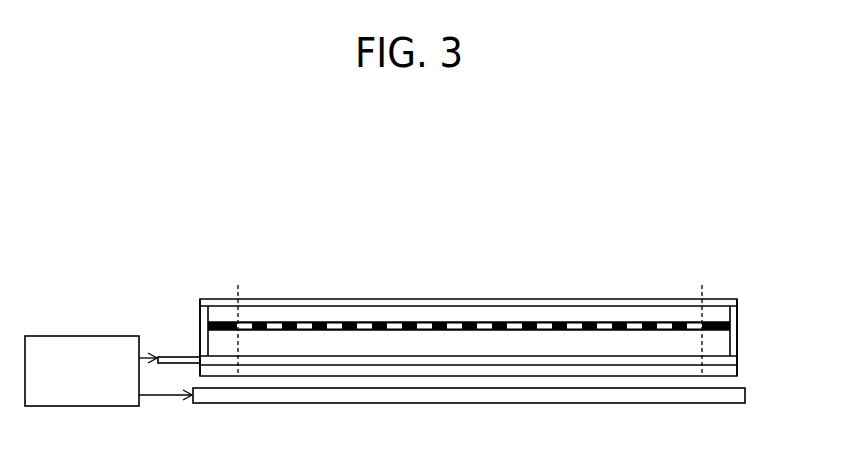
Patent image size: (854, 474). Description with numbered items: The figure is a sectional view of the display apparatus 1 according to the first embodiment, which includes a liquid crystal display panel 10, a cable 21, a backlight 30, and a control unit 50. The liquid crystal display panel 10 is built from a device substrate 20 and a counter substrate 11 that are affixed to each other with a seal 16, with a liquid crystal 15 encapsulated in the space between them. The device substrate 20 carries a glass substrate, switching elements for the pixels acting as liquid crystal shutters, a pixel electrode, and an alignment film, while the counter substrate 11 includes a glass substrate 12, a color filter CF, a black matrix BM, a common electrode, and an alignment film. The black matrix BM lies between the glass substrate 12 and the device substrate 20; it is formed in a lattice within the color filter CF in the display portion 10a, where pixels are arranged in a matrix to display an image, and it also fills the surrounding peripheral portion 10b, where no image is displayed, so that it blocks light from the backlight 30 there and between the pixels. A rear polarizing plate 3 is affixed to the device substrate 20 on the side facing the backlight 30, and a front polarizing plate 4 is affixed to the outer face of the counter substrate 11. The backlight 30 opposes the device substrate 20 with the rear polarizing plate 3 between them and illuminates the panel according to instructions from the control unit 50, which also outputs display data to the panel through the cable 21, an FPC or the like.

The display apparatus 1 is at (798, 214).
The rear polarizing plate 3 is at (681, 377).
The front polarizing plate 4 is at (643, 299).
The liquid crystal display panel 10 is at (709, 237).
The display portion 10a is at (669, 297).
The peripheral portion 10b is at (222, 294).
The counter substrate 11 is at (788, 265).
The glass substrate 12 is at (733, 316).
The liquid crystal 15 is at (602, 345).
The seal 16 is at (205, 338).
The device substrate 20 is at (739, 368).
The cable 21 is at (172, 355).
The backlight 30 is at (752, 398).
The control unit 50 is at (103, 336).
The color filter CF is at (694, 321).
The black matrix BM is at (736, 326).